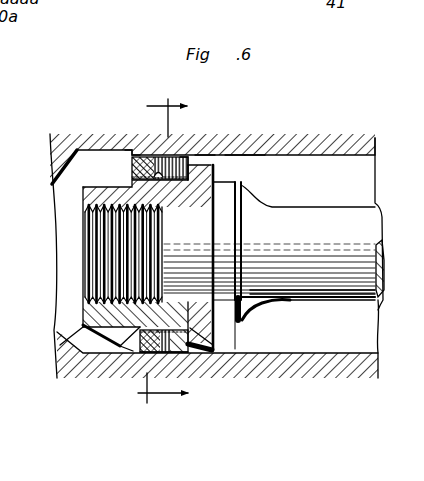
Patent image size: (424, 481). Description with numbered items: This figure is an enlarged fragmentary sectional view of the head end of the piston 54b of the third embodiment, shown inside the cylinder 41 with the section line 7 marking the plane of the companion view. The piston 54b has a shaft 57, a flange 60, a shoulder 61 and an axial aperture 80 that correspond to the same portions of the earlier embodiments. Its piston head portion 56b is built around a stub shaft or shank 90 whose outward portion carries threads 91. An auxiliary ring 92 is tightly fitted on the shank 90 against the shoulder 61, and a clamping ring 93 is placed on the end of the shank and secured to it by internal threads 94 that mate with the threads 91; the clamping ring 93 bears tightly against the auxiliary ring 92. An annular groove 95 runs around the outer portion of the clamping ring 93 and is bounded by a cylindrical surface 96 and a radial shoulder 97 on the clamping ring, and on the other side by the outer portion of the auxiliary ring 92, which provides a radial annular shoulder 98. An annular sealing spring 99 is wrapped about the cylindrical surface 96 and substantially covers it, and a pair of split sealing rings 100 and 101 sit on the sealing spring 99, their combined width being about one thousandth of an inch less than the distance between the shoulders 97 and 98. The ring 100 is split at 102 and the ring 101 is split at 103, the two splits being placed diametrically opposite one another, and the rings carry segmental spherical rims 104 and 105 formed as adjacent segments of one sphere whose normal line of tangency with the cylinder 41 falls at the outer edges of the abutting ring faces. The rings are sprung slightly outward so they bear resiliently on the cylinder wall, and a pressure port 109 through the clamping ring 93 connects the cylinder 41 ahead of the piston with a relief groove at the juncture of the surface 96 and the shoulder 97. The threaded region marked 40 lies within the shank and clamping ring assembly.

The section line 7- 7 is at (163, 252).
The threads 40 is at (158, 232).
The cylinder 41 is at (337, 172).
The piston 54b is at (350, 153).
The piston head portion 56b is at (251, 152).
The shaft 57 is at (327, 298).
The flange 60 is at (240, 210).
The shoulder 61 is at (242, 239).
The axial aperture 80 is at (383, 252).
The shank 90 is at (256, 309).
The threads 91 is at (63, 372).
The auxiliary ring 92 is at (217, 328).
The clamping ring 93 is at (63, 147).
The internal threads 94 is at (85, 225).
The annular groove 95 is at (144, 372).
The cylindrical surface 96 is at (167, 205).
The radial shoulder 97 is at (106, 187).
The radial annular shoulder 98 is at (205, 152).
The sealing spring 99 is at (190, 340).
The split sealing ring 100 is at (150, 157).
The split sealing ring 101 is at (198, 347).
The split 102 is at (120, 370).
The split 103 is at (183, 155).
The segmental spherical rim 104 is at (131, 149).
The segmental spherical rim 105 is at (231, 152).
The pressure port 109 is at (100, 362).